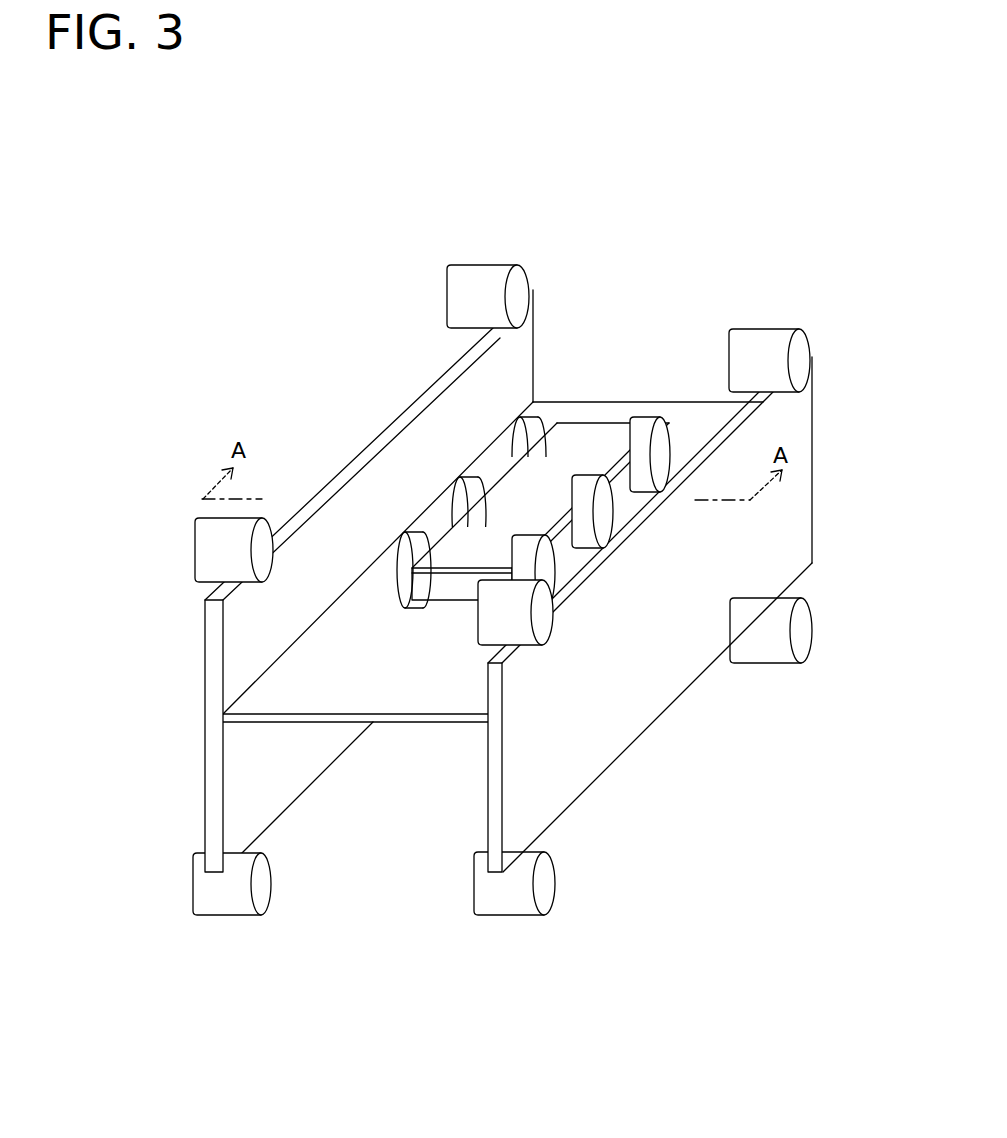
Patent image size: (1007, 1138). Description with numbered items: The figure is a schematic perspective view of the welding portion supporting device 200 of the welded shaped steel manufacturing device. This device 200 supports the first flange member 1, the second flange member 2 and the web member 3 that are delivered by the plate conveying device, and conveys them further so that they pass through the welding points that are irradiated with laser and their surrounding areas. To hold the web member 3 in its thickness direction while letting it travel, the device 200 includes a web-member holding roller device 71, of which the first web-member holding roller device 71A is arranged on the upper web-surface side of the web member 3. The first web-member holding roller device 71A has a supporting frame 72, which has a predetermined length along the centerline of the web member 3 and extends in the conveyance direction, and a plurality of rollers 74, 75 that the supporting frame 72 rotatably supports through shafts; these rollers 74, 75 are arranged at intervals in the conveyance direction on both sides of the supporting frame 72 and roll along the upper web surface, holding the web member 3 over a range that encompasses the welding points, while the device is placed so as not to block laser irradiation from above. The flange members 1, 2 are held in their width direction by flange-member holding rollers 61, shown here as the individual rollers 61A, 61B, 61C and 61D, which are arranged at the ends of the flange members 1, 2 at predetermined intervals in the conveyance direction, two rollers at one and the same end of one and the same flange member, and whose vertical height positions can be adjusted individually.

The welding portion supporting device 200 is at (417, 200).
The first flange member 1 is at (213, 662).
The second flange member 2 is at (608, 746).
The web member 3 is at (397, 721).
The flange-member holding rollers 61 is at (468, 590).
The flange-member holding roller 61A is at (459, 294).
The flange-member holding roller 61B is at (203, 890).
The flange-member holding roller 61C is at (767, 340).
The flange-member holding roller 61D is at (766, 652).
The web-member holding roller device 71 is at (537, 500).
The first web-member holding roller device 71A is at (598, 432).
The supporting frame 72 is at (457, 592).
The rollers 74 is at (548, 428).
The rollers 75 is at (662, 453).